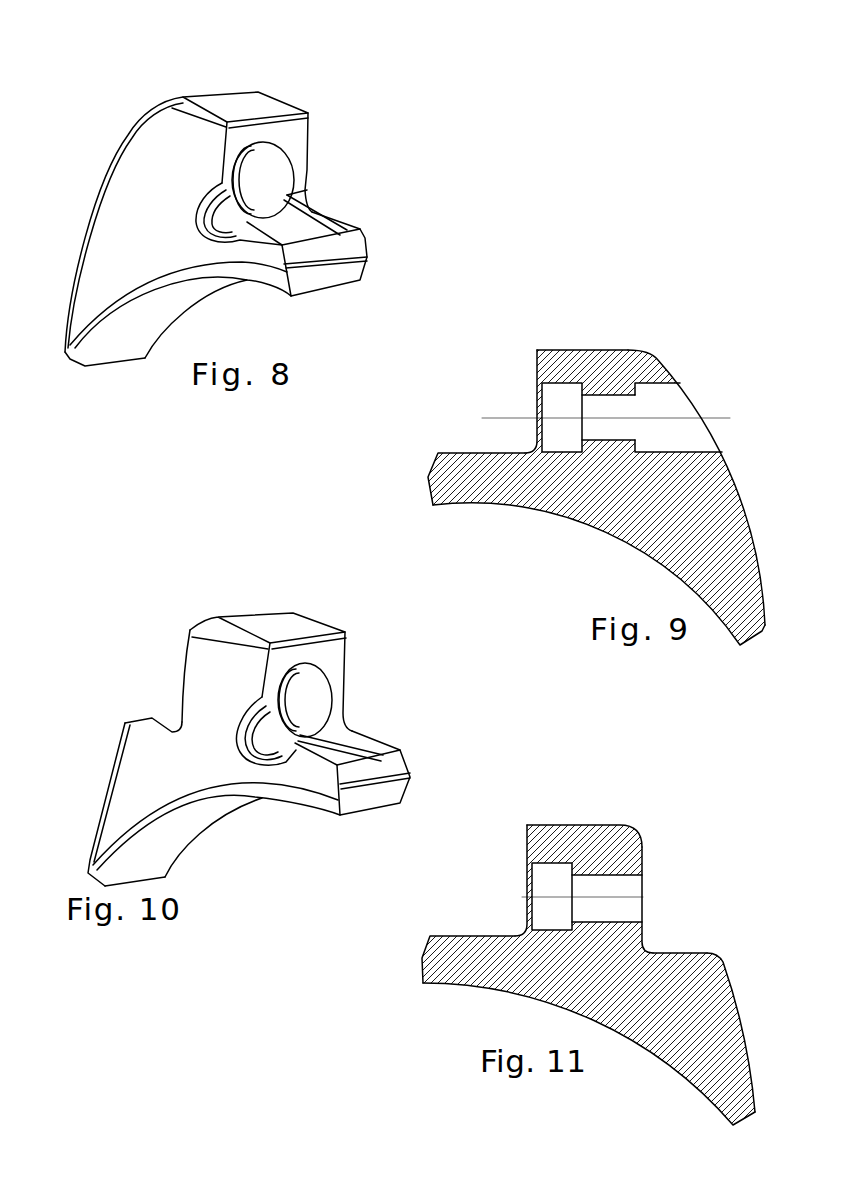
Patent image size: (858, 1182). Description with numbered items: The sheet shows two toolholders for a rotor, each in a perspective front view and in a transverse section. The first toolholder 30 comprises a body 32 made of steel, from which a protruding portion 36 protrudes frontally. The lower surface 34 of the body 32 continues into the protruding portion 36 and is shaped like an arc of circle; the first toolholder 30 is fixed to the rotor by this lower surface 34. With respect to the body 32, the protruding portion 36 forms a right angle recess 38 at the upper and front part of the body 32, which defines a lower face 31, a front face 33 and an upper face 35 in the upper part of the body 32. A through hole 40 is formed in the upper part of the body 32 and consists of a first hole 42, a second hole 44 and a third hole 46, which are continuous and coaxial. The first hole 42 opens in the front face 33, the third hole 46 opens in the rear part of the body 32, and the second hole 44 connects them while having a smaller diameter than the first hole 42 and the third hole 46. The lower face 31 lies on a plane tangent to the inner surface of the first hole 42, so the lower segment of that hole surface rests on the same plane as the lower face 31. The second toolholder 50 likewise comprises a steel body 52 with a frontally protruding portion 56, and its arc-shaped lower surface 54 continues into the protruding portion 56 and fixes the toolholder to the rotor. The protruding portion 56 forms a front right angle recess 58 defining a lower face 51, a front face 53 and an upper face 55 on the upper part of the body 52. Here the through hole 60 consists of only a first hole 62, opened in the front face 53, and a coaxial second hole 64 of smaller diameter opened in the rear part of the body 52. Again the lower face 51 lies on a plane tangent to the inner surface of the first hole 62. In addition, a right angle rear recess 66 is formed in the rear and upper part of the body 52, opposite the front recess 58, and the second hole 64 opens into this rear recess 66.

In FIG. 8, the first toolholder 30 is at (125, 100).
In FIG. 9, the first toolholder 30 is at (622, 296).
In FIG. 8, the lower face 31 is at (334, 228).
In FIG. 9, the lower face 31 is at (455, 452).
In FIG. 8, the body 32 is at (125, 222).
In FIG. 9, the body 32 is at (642, 512).
In FIG. 8, the front face 33 is at (290, 130).
In FIG. 9, the front face 33 is at (536, 362).
In FIG. 8, the lower surface 34 is at (140, 328).
In FIG. 9, the lower surface 34 is at (557, 517).
In FIG. 8, the upper face 35 is at (237, 103).
In FIG. 9, the upper face 35 is at (567, 348).
In FIG. 8, the protruding portion 36 is at (264, 262).
In FIG. 9, the protruding portion 36 is at (475, 483).
In FIG. 9, the right angle recess 38 is at (513, 437).
In FIG. 9, the through hole 40 is at (677, 351).
In FIG. 8, the first hole 42 is at (268, 185).
In FIG. 9, the first hole 42 is at (567, 402).
In FIG. 9, the second hole 44 is at (609, 420).
In FIG. 9, the third hole 46 is at (675, 440).
In FIG. 10, the second toolholder 50 is at (190, 594).
In FIG. 11, the second toolholder 50 is at (585, 800).
In FIG. 10, the lower face 51 is at (377, 747).
In FIG. 11, the lower face 51 is at (443, 933).
In FIG. 10, the body 52 is at (109, 804).
In FIG. 11, the body 52 is at (731, 1026).
In FIG. 10, the front face 53 is at (334, 648).
In FIG. 11, the front face 53 is at (524, 845).
In FIG. 10, the lower surface 54 is at (168, 846).
In FIG. 11, the lower surface 54 is at (653, 1040).
In FIG. 10, the upper face 55 is at (264, 615).
In FIG. 11, the upper face 55 is at (560, 825).
In FIG. 10, the protruding portion 56 is at (302, 780).
In FIG. 11, the protruding portion 56 is at (461, 965).
In FIG. 11, the front right angle recess 58 is at (507, 917).
In FIG. 11, the through hole 60 is at (641, 834).
In FIG. 10, the first hole 62 is at (315, 702).
In FIG. 11, the first hole 62 is at (554, 891).
In FIG. 11, the second hole 64 is at (595, 907).
In FIG. 10, the rear recess 66 is at (168, 718).
In FIG. 11, the rear recess 66 is at (694, 932).